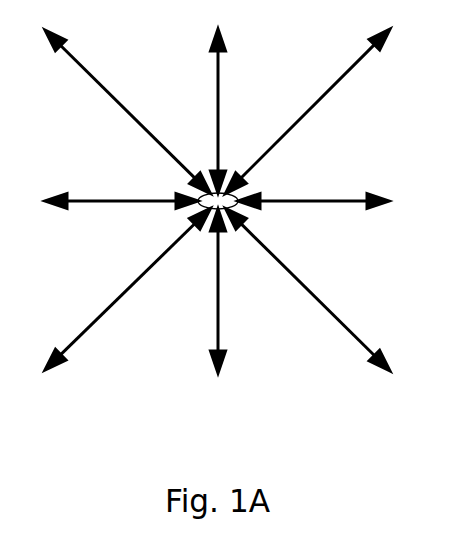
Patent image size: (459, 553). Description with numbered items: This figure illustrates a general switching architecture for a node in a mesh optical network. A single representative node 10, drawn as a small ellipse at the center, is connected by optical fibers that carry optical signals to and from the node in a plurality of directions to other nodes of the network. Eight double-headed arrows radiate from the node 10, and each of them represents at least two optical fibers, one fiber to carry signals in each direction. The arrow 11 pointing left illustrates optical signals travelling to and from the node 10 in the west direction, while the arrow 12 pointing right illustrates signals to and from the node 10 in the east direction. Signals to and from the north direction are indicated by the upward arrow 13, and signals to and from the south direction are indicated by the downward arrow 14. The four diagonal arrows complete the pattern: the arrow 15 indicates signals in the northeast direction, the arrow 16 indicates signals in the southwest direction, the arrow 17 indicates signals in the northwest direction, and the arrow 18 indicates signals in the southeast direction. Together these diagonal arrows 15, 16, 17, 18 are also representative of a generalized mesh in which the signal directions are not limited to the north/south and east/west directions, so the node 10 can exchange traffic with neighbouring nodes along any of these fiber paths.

The node 10 is at (236, 207).
The arrow 11 is at (127, 202).
The arrow 12 is at (338, 200).
The arrow 13 is at (219, 100).
The arrow 14 is at (217, 340).
The arrow 15 is at (341, 103).
The arrow 16 is at (100, 313).
The arrow 17 is at (143, 121).
The arrow 18 is at (335, 321).